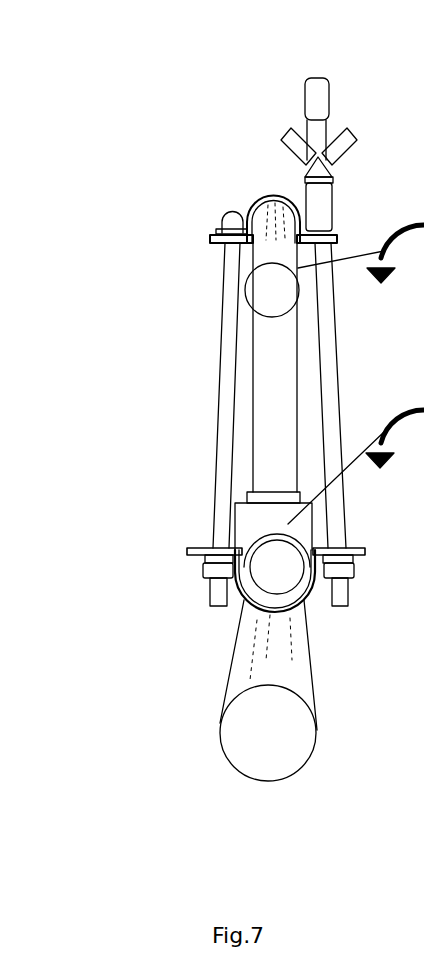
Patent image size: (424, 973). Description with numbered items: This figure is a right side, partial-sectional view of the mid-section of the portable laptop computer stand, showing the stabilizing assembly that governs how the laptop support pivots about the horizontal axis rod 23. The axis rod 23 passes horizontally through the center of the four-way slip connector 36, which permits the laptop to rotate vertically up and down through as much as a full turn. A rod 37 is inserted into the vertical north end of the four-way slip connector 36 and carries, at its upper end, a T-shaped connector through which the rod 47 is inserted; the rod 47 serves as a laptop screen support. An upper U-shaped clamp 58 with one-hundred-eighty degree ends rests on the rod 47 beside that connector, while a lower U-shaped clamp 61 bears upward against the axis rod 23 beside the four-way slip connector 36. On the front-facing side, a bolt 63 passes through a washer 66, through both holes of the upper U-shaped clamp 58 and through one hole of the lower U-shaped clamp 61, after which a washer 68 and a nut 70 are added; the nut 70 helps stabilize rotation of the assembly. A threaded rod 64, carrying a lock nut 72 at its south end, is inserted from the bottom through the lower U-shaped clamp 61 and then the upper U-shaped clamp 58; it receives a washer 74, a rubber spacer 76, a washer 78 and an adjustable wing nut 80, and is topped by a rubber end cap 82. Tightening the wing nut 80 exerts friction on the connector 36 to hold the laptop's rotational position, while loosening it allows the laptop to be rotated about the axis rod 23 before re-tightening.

The horizontal axis rod 23 is at (240, 668).
The four-way slip connector 36 is at (245, 520).
The rod 37 is at (262, 426).
The rod 47 is at (272, 253).
The U-shaped clamp 58 is at (257, 203).
The lower U-shaped clamp 61 is at (268, 612).
The bolt 63 is at (222, 380).
The threaded rod 64 is at (330, 372).
The washer 66 is at (216, 230).
The washer 68 is at (203, 560).
The nut 70 is at (208, 572).
The lock nut 72 is at (350, 573).
The washer 74 is at (312, 177).
The rubber spacer 76 is at (322, 197).
The washer 78 is at (325, 234).
The wing nut 80 is at (347, 142).
The rubber end cap 82 is at (315, 98).